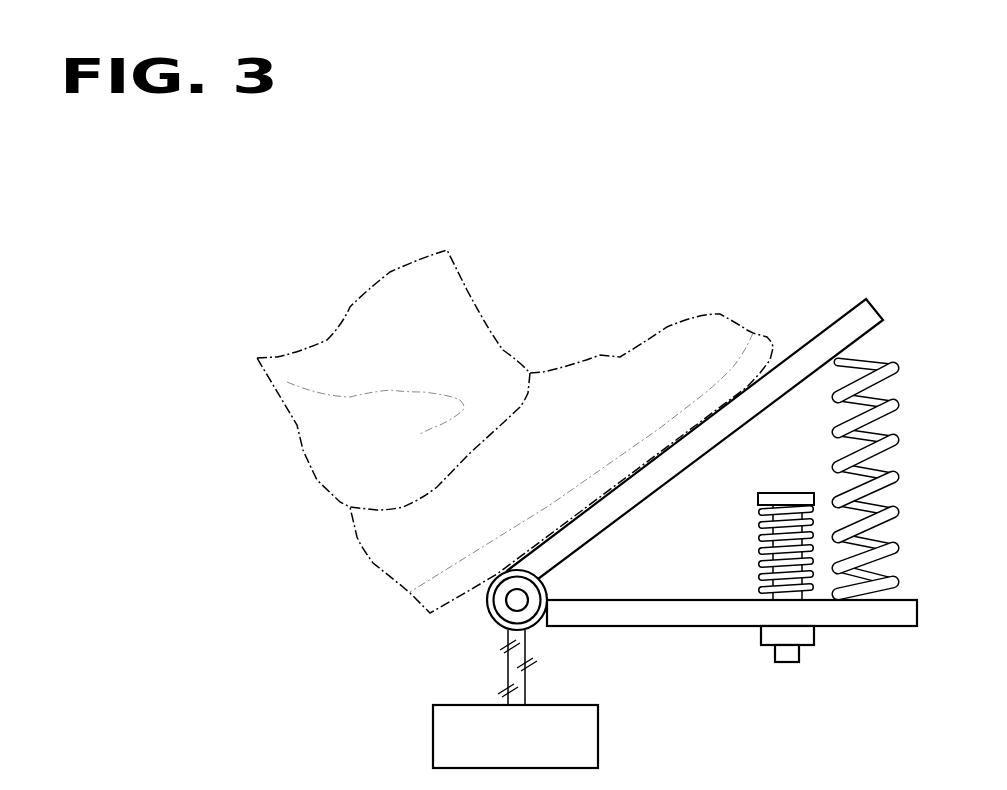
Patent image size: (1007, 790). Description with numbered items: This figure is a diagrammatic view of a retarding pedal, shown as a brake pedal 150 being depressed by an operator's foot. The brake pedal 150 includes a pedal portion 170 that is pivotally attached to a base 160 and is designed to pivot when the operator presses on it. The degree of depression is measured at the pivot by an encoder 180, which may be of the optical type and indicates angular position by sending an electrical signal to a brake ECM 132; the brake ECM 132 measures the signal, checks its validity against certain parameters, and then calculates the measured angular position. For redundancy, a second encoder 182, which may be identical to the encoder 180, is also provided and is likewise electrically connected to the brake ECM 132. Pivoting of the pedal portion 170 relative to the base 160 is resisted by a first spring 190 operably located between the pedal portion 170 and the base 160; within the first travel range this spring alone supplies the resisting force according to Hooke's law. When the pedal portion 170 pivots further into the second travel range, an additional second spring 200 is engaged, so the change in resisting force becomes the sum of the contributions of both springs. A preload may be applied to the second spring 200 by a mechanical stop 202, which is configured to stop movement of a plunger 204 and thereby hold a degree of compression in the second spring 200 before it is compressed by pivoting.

The brake pedal 150 is at (570, 302).
The pedal portion 170 is at (831, 327).
The first spring 190 is at (903, 375).
The second spring 200 is at (760, 532).
The base 160 is at (917, 612).
The mechanical stop 202 is at (760, 632).
The plunger 204 is at (800, 655).
The encoder 180 is at (497, 629).
The second encoder 182 is at (493, 621).
The brake ECM 132 is at (433, 725).